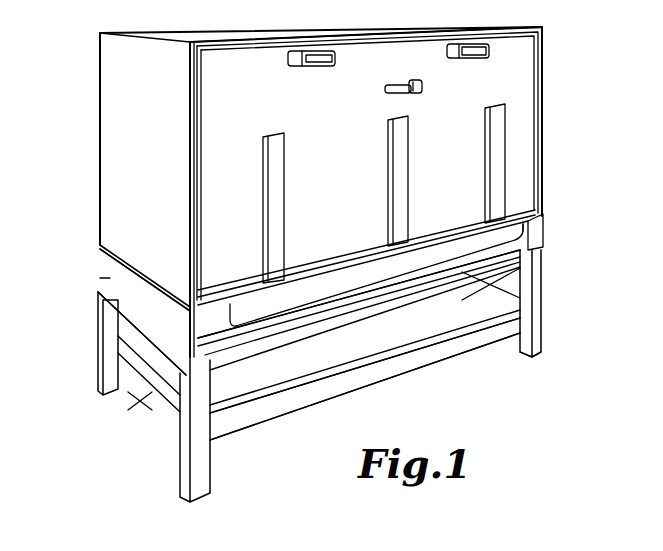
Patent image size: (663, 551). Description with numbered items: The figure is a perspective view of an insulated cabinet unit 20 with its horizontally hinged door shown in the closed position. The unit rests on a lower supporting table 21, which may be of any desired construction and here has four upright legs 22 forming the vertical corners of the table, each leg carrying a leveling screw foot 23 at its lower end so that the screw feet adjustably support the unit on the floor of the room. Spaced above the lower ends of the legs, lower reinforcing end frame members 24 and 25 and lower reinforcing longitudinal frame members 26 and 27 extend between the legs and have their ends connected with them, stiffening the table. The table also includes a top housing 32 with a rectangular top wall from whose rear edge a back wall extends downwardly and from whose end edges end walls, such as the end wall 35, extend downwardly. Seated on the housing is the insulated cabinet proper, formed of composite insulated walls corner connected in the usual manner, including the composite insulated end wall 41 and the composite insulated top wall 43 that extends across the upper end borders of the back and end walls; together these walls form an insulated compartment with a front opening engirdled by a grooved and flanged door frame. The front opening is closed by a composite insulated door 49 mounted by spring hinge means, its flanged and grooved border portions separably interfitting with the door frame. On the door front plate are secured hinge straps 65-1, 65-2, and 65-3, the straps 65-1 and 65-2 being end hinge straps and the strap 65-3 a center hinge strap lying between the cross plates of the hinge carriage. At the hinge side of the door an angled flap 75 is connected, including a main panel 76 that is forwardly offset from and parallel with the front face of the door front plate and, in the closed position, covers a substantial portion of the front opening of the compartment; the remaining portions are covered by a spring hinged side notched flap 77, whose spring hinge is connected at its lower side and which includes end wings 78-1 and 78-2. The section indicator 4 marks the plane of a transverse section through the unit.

The section line 4- 4 is at (212, 8).
The insulated cabinet unit 20 is at (102, 184).
The lower supporting table 21 is at (168, 423).
The upright legs 22 is at (98, 372).
The leveling screw foot 23 is at (518, 360).
The lower reinforcing end frame member 24 is at (152, 395).
The lower reinforcing end frame member 25 is at (483, 292).
The lower reinforcing longitudinal frame member 26 is at (365, 373).
The lower reinforcing longitudinal frame member 27 is at (128, 336).
The top housing 32 is at (107, 282).
The end wall 35 is at (120, 304).
The composite insulated end wall 41 is at (117, 98).
The composite insulated top wall 43 is at (318, 29).
The composite insulated door 49 is at (530, 80).
The end hinge strap 65-1 is at (284, 168).
The end hinge strap 65-2 is at (492, 145).
The center hinge strap 65-3 is at (388, 212).
The angled flap 75 is at (446, 258).
The main panel 76 is at (397, 270).
The spring hinged side notched flap 77 is at (535, 262).
The end wing 78-1 is at (222, 315).
The end wing 78-2 is at (540, 223).